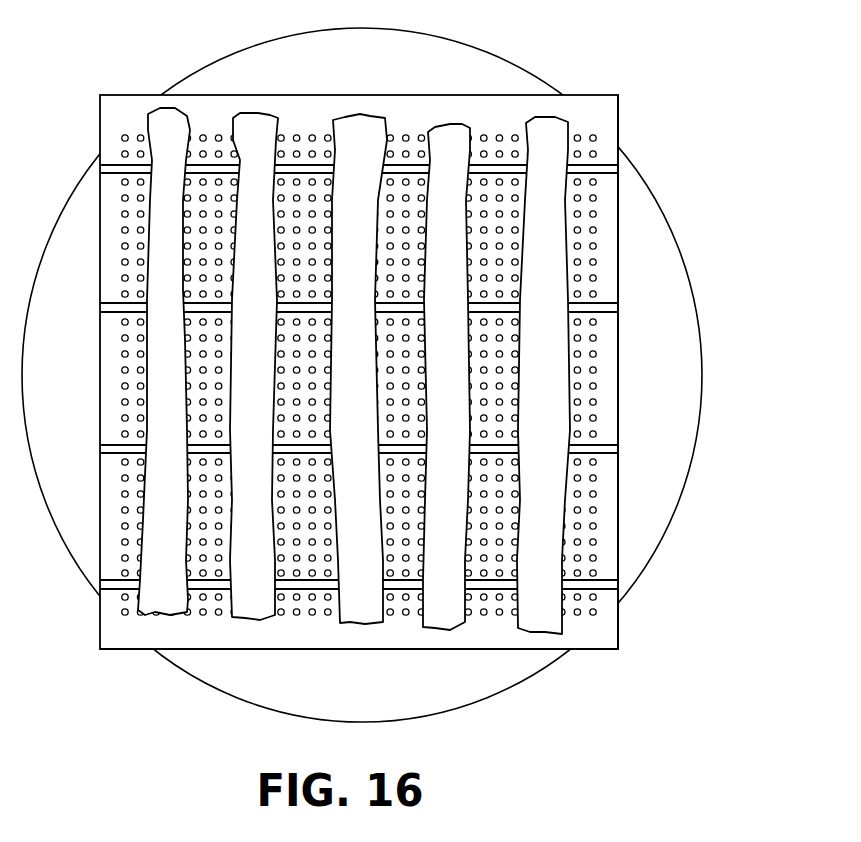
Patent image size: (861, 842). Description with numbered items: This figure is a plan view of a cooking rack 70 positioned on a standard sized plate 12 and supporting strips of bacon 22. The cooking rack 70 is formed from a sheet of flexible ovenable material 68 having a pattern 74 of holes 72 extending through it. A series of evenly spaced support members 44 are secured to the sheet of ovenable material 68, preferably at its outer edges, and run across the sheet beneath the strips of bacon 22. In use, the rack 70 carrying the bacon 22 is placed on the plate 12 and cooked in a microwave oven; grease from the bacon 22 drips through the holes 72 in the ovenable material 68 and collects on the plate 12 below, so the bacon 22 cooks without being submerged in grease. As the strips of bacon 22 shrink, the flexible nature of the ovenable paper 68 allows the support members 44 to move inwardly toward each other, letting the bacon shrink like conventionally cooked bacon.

The plate 12 is at (672, 270).
The strips of bacon 22 is at (257, 122).
The support members 44 is at (127, 163).
The sheet of flexible ovenable material 68 is at (488, 108).
The cooking rack 70 is at (598, 108).
The holes 72 is at (493, 620).
The pattern of holes 74 is at (588, 635).